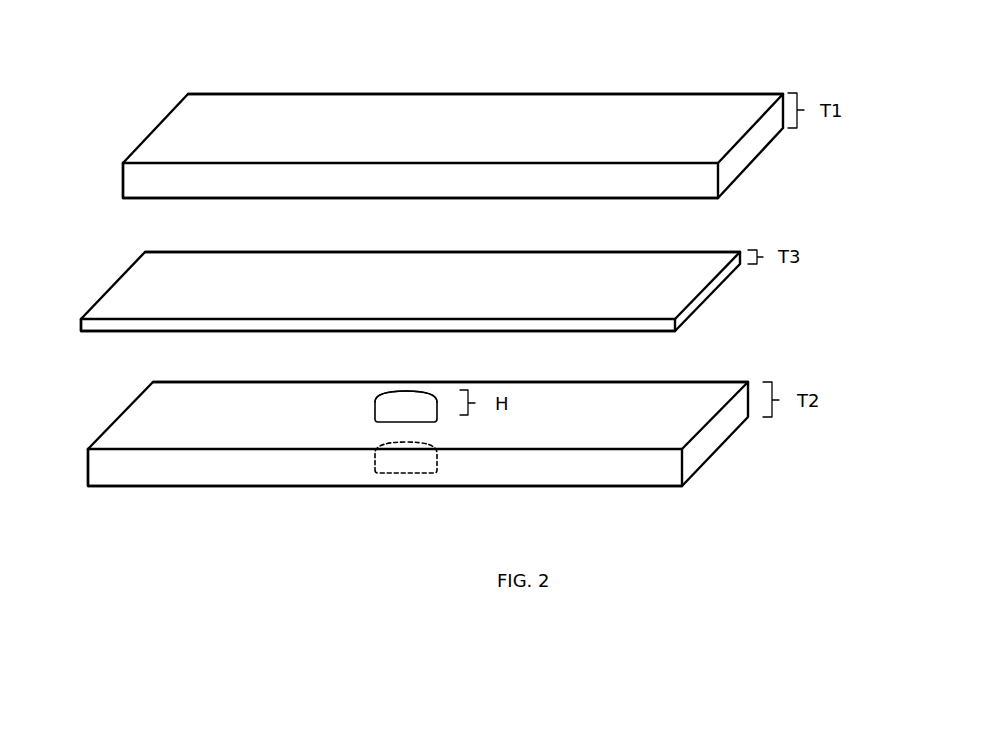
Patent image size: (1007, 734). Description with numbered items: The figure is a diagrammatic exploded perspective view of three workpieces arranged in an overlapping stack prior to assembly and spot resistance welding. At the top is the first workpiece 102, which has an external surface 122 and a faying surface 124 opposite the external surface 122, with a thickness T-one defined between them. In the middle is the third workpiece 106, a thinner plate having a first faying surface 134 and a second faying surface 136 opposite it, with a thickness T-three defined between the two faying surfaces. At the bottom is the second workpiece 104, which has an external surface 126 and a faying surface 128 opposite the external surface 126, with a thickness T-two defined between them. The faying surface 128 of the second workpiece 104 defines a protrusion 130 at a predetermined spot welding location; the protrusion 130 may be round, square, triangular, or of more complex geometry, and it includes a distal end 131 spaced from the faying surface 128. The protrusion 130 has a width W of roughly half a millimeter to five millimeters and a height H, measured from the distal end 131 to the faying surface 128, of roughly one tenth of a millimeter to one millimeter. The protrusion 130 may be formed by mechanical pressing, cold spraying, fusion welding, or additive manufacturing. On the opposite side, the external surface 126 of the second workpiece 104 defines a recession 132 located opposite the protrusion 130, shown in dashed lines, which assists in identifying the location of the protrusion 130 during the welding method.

The first workpiece 102 is at (836, 82).
The second workpiece 104 is at (812, 437).
The third workpiece 106 is at (812, 282).
The external surface 122 is at (718, 113).
The faying surface 124 is at (133, 200).
The external surface 126 is at (139, 488).
The faying surface 128 is at (683, 403).
The protrusion 130 is at (378, 403).
The distal end 131 is at (405, 393).
The recession 132 is at (387, 463).
The first faying surface 134 is at (645, 275).
The second faying surface 136 is at (110, 335).